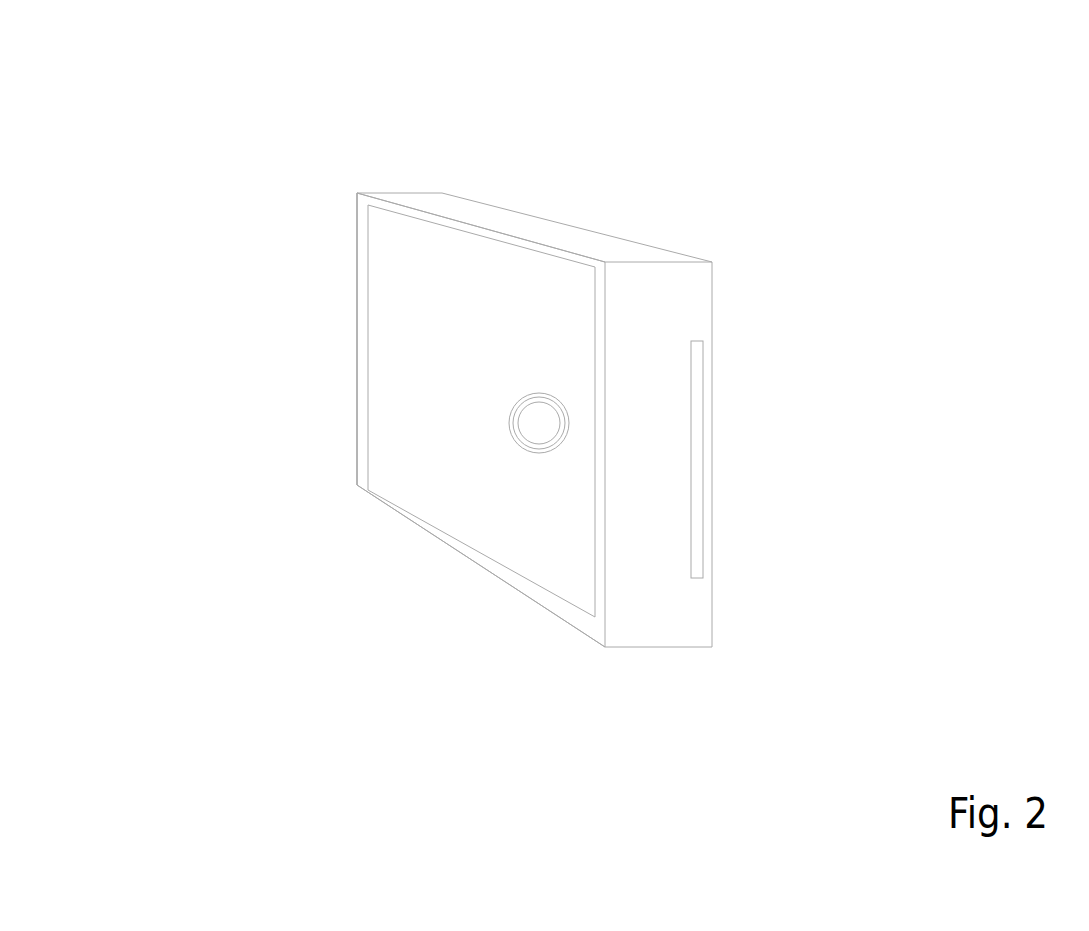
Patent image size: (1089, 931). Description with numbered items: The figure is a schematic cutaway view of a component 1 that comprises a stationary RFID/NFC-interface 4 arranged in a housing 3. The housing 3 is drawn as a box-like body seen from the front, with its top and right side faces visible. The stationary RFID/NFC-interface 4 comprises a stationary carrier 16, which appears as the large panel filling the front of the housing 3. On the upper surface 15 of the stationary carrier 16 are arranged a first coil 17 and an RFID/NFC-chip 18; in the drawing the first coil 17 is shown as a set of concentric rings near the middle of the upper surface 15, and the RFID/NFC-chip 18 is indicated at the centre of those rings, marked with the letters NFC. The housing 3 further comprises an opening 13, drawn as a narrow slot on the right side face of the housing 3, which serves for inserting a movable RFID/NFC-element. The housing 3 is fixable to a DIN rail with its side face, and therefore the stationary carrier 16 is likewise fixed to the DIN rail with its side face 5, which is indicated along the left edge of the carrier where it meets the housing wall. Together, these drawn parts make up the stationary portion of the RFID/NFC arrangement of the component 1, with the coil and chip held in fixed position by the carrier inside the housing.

The component 1 is at (772, 92).
The housing 3 is at (468, 217).
The stationary RFID/NFC-interface 4 is at (332, 236).
The side face 5 is at (370, 402).
The opening 13 is at (690, 443).
The upper surface 15 is at (410, 472).
The stationary carrier 16 is at (377, 375).
The first coil 17 is at (528, 443).
The RFID/NFC-chip 18 is at (539, 413).